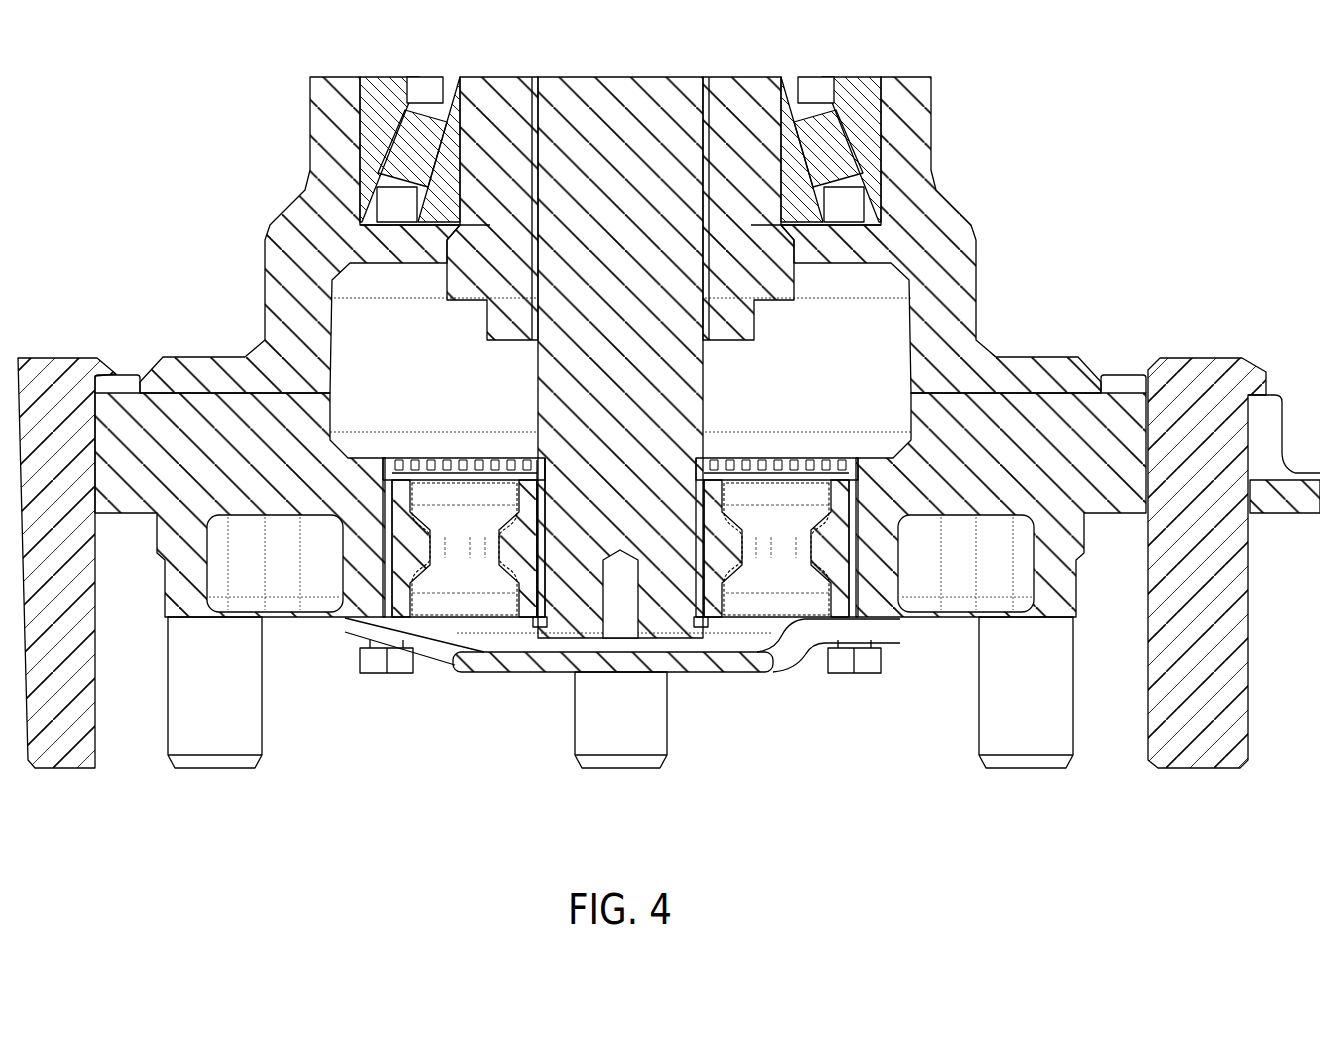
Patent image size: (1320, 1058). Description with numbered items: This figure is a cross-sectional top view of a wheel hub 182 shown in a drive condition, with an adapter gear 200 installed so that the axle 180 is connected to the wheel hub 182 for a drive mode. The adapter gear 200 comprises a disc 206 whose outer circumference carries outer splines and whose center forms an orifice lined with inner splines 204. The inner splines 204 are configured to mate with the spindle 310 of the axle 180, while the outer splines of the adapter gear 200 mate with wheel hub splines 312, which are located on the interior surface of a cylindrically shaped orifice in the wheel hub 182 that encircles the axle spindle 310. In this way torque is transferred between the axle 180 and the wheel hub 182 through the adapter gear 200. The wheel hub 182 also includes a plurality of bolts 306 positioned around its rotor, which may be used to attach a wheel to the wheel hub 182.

The axle 180 is at (636, 598).
The wheel hub 182 is at (283, 241).
The adapter gear 200 is at (803, 563).
The inner splines 204 is at (543, 558).
The disc 206 is at (420, 496).
The bolts 306 is at (263, 689).
The spindle 310 is at (620, 673).
The wheel hub splines 312 is at (858, 466).